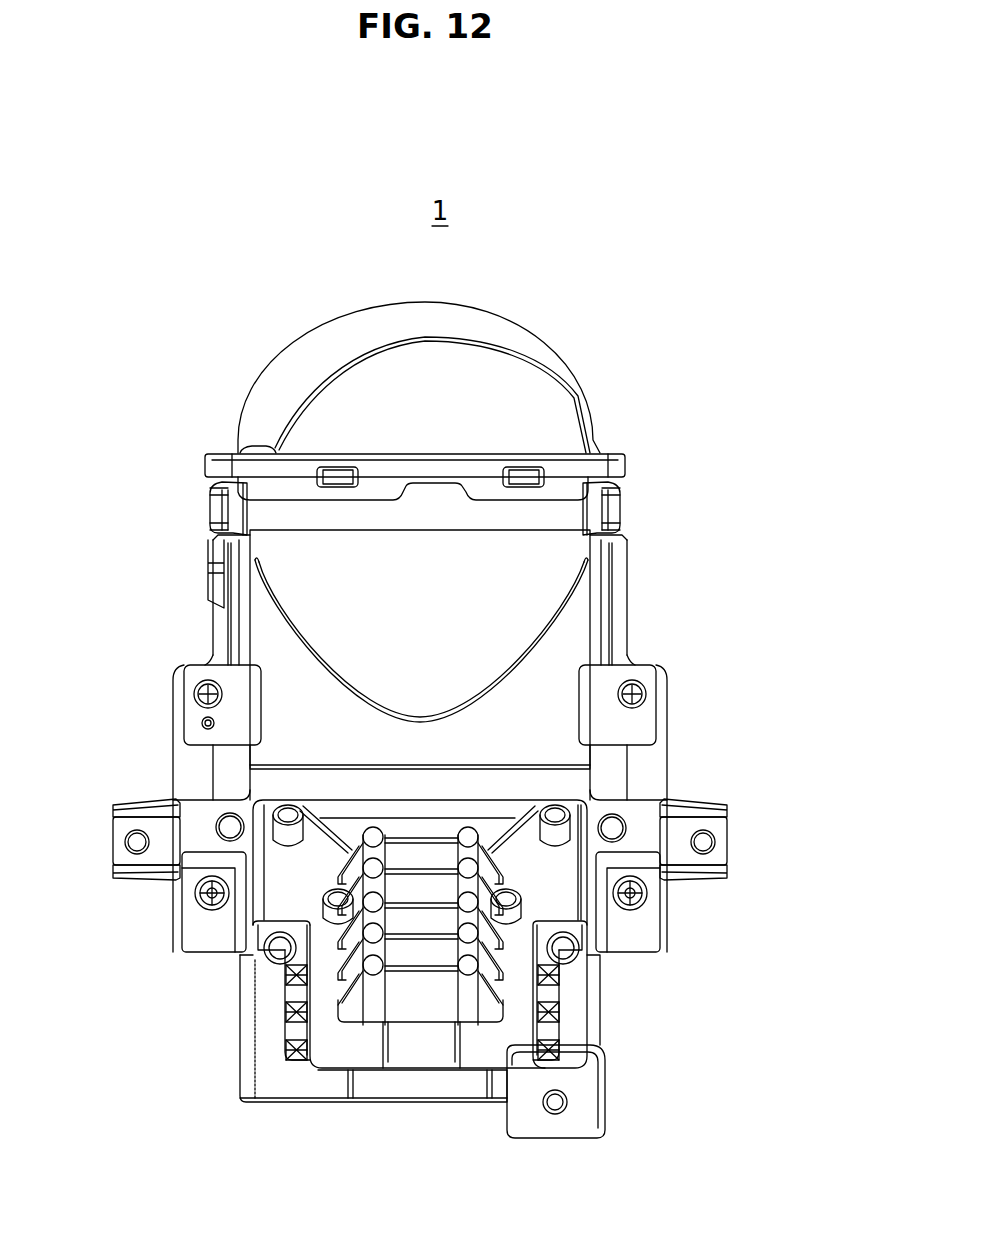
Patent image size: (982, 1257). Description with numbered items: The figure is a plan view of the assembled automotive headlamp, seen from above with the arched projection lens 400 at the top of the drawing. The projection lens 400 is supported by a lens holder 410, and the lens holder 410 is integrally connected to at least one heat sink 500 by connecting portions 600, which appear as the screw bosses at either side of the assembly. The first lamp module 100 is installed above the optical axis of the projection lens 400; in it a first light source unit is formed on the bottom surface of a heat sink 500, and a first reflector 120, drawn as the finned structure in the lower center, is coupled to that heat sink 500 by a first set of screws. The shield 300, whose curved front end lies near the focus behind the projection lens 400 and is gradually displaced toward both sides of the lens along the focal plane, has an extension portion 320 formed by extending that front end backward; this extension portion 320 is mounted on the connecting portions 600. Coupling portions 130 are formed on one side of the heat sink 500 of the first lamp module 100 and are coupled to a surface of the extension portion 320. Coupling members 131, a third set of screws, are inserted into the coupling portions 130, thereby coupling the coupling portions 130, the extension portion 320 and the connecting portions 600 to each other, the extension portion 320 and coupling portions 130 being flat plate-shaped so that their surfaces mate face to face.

The first lamp module 100 is at (413, 1092).
The first reflector 120 is at (503, 848).
The coupling portions 130 is at (196, 930).
The coupling members 131 is at (205, 893).
The shield 300 is at (543, 697).
The extension portion 320 is at (203, 808).
The projection lens 400 is at (497, 327).
The lens holder 410 is at (597, 512).
The heat sink 500 is at (283, 1008).
The connecting portions 600 is at (207, 760).